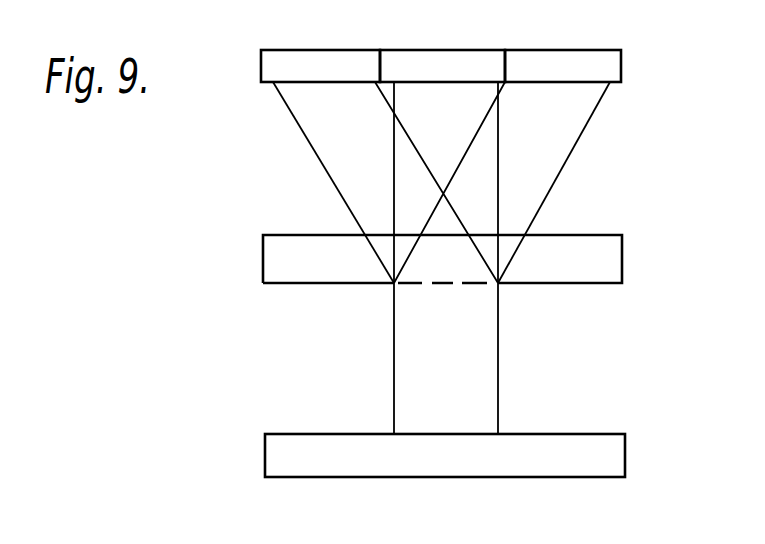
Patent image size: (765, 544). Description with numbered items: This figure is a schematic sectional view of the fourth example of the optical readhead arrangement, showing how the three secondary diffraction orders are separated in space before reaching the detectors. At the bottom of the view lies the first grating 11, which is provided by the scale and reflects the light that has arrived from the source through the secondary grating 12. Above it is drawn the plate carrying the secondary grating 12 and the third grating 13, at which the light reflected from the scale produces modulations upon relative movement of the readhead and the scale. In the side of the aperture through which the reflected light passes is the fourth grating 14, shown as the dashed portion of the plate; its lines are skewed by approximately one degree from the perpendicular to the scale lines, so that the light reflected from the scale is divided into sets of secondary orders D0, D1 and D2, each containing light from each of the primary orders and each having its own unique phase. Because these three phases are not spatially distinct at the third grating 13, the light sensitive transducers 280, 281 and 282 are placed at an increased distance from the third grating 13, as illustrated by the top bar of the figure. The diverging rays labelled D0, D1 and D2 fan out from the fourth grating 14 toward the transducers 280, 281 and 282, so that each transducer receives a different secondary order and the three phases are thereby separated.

The light sensitive transducer 280 is at (310, 48).
The light sensitive transducer 281 is at (502, 32).
The light sensitive transducer 282 is at (600, 48).
The secondary order D0 is at (467, 110).
The secondary order D1 is at (542, 174).
The secondary order D2 is at (315, 137).
The secondary grating 12 is at (486, 242).
The third grating 13 is at (600, 235).
The fourth grating 14 is at (447, 284).
The first grating 11 is at (592, 433).